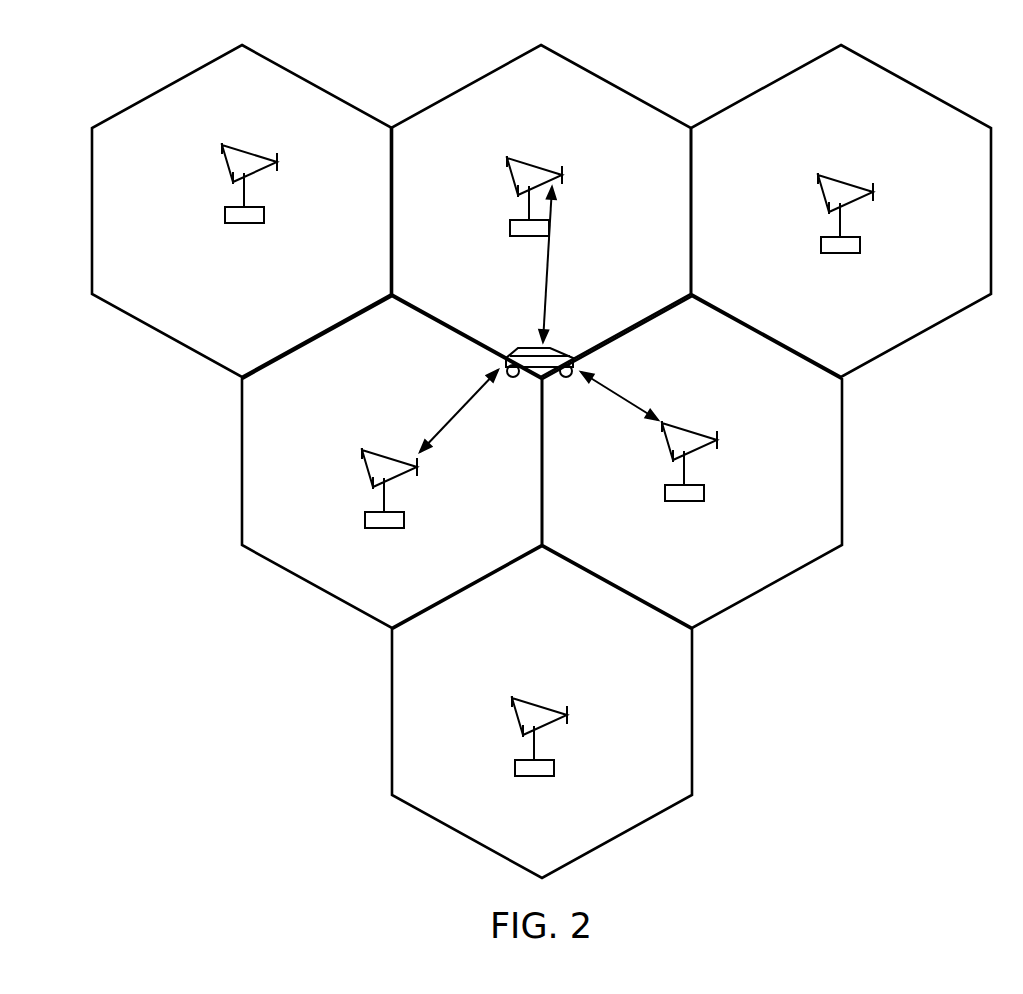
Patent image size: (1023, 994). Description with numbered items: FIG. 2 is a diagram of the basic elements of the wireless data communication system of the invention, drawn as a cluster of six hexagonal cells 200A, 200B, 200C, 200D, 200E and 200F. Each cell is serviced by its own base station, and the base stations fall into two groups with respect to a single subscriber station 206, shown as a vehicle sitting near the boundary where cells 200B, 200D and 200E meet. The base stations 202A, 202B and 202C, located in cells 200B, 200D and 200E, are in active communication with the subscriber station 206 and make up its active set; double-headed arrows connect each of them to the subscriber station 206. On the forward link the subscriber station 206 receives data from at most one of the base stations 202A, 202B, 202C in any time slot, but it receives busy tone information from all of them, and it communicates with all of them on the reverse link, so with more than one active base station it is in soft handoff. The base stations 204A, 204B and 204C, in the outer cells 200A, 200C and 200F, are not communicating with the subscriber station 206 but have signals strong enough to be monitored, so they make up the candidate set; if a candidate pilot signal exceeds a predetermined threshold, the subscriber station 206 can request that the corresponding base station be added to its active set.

The cell 200A is at (182, 73).
The cell 200B is at (492, 68).
The cell 200C is at (877, 62).
The cell 200D is at (243, 472).
The cell 200E is at (843, 472).
The cell 200F is at (692, 730).
The base station 202A is at (525, 160).
The base station 202B is at (380, 452).
The base station 202C is at (685, 428).
The base station 204A is at (243, 148).
The base station 204B is at (840, 177).
The base station 204C is at (535, 700).
The subscriber station 206 is at (530, 347).